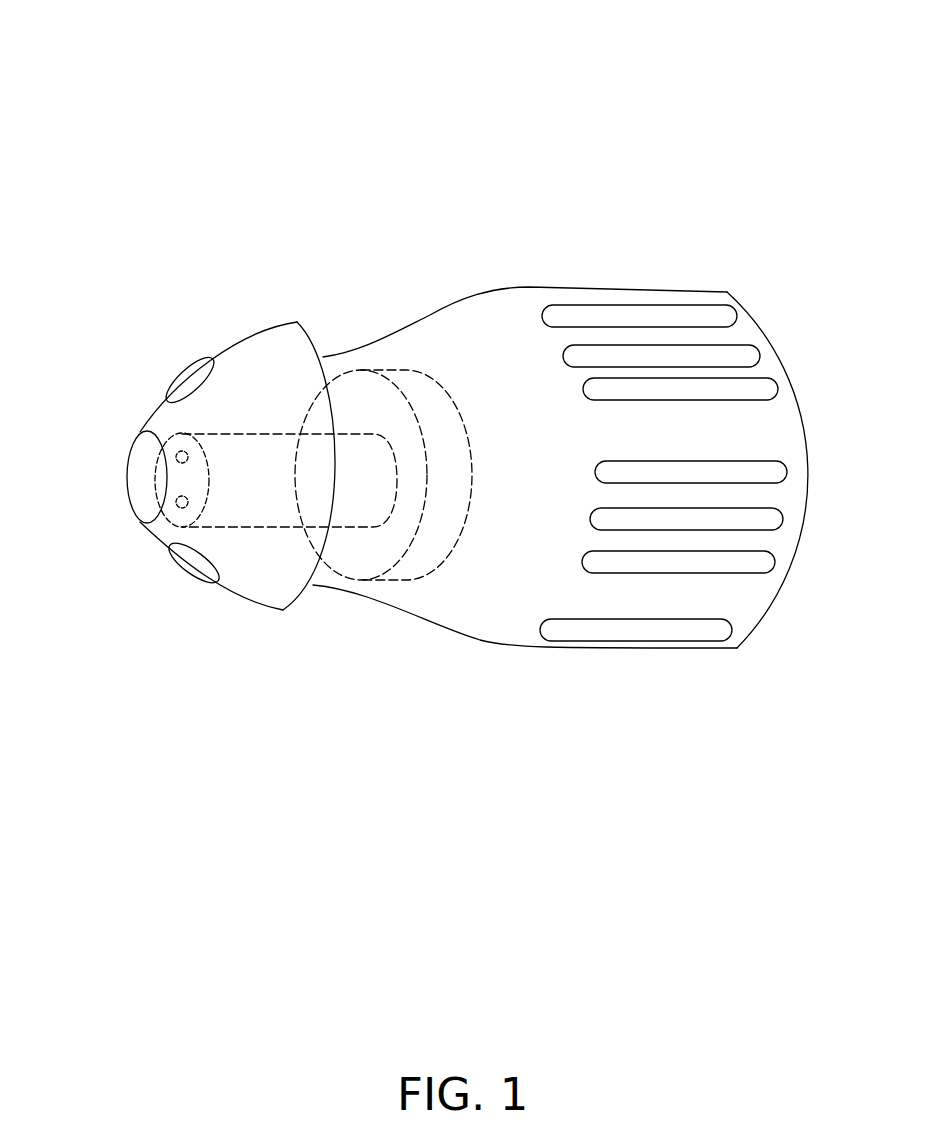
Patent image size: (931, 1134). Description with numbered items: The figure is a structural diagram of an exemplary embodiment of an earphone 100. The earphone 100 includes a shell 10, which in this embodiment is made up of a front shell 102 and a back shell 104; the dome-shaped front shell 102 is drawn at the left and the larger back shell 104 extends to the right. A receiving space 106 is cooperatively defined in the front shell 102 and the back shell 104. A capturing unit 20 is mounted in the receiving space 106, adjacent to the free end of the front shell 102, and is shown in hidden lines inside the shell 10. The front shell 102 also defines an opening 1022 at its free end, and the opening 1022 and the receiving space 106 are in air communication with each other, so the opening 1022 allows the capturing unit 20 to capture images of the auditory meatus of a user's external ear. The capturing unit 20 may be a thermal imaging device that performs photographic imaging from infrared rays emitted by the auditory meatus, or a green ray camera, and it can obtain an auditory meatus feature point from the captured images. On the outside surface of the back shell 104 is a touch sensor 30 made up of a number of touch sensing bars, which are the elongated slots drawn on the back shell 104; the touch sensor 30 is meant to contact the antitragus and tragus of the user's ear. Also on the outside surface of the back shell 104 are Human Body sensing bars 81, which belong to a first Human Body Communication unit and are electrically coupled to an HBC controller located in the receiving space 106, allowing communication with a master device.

The earphone 100 is at (458, 37).
The shell 10 is at (452, 240).
The front shell 102 is at (277, 342).
The back shell 104 is at (458, 333).
The receiving space 106 is at (150, 446).
The opening 1022 is at (143, 465).
The capturing unit 20 is at (182, 502).
The touch sensor 30 is at (688, 317).
The Human Body sensing bars 81 is at (735, 355).